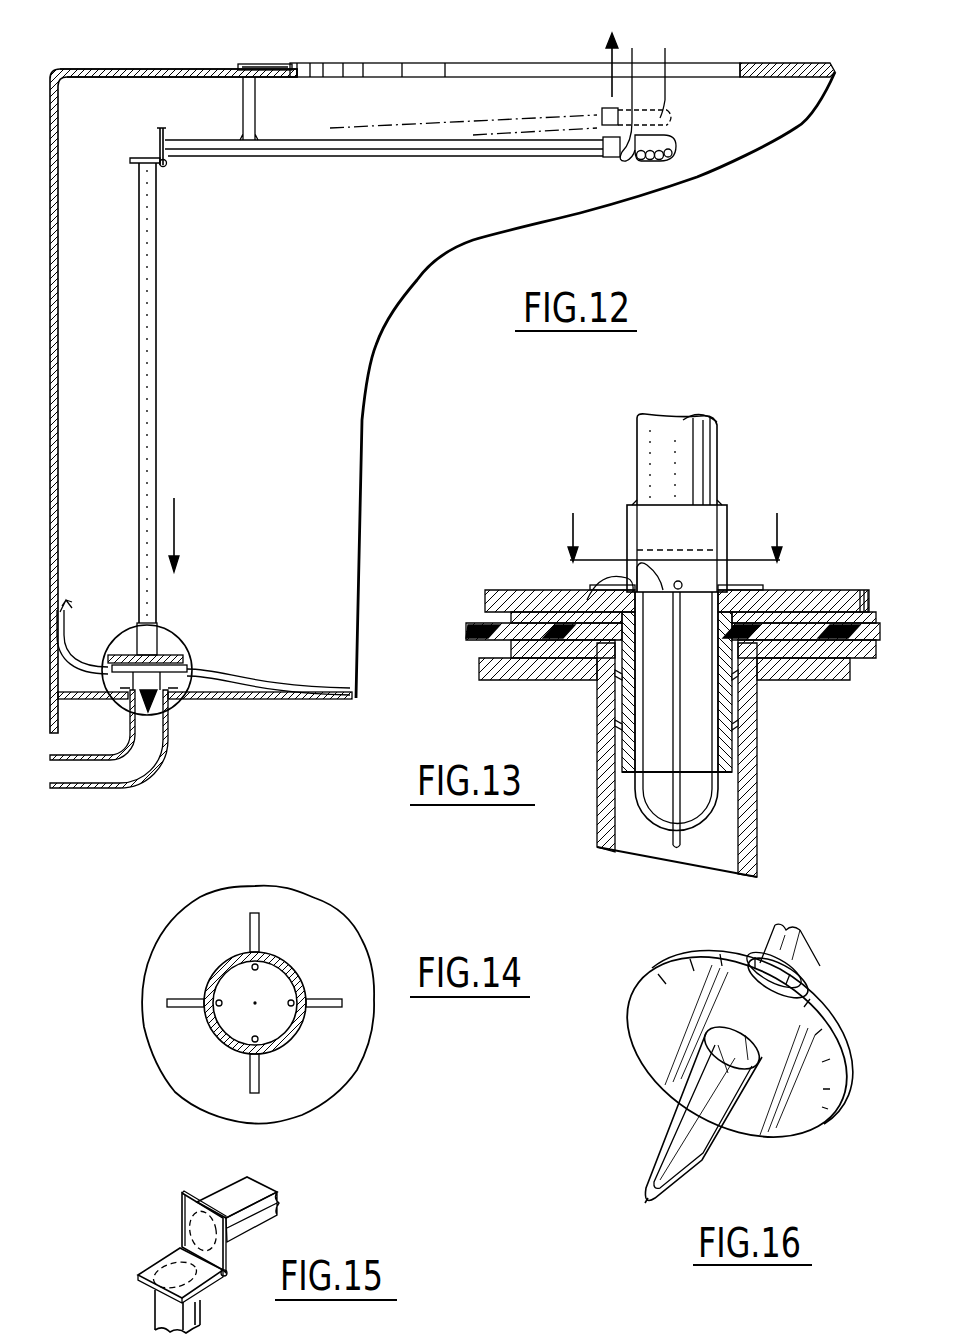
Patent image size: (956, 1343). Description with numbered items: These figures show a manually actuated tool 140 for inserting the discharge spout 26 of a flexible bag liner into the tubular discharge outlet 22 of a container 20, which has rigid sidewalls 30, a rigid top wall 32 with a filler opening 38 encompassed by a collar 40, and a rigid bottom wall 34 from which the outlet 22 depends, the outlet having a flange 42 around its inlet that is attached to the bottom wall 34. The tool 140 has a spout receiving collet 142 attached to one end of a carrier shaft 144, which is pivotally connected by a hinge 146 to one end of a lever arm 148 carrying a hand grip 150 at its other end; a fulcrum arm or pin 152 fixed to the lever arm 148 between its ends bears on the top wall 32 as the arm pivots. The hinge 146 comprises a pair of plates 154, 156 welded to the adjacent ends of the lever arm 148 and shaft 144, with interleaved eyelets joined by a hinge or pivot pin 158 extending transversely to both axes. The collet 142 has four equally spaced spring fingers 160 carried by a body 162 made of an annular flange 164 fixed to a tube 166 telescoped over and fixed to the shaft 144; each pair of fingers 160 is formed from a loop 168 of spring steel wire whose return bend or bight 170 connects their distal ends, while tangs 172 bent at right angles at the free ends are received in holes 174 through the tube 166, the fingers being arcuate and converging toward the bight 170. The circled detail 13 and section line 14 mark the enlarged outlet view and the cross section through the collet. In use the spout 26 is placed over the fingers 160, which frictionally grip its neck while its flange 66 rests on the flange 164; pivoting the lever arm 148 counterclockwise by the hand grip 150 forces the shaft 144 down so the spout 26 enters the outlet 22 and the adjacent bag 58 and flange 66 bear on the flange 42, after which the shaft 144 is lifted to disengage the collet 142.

In FIG. 12, the container 20 is at (187, 50).
In FIG. 12, the tubular discharge outlet 22 is at (160, 770).
In FIG. 13, the tubular discharge outlet 22 is at (760, 817).
In FIG. 12, the discharge spout 26 is at (172, 680).
In FIG. 12, the sidewalls 30 is at (52, 498).
In FIG. 12, the top wall 32 is at (103, 68).
In FIG. 12, the bottom wall 34 is at (305, 700).
In FIG. 13, the bottom wall 34 is at (481, 668).
In FIG. 12, the filler opening 38 is at (385, 71).
In FIG. 12, the collar 40 is at (272, 64).
In FIG. 13, the flange 42 is at (511, 650).
In FIG. 12, the bag 58 is at (213, 671).
In FIG. 13, the bag 58 is at (466, 631).
In FIG. 13, the flange 66 is at (511, 617).
In FIG. 12, the tool 140 is at (158, 393).
In FIG. 12, the spout receiving collet 142 is at (122, 652).
In FIG. 12, the carrier shaft 144 is at (143, 520).
In FIG. 13, the carrier shaft 144 is at (638, 438).
In FIG. 16, the carrier shaft 144 is at (812, 945).
In FIG. 15, the carrier shaft 144 is at (155, 1315).
In FIG. 12, the hinge 146 is at (157, 147).
In FIG. 15, the hinge 146 is at (162, 1260).
In FIG. 12, the lever arm 148 is at (347, 153).
In FIG. 15, the lever arm 148 is at (267, 1200).
In FIG. 12, the hand grip 150 is at (678, 118).
In FIG. 12, the fulcrum arm or pin 152 is at (258, 119).
In FIG. 15, the plate 154 is at (147, 1267).
In FIG. 15, the plate 156 is at (182, 1208).
In FIG. 15, the hinge or pivot pin 158 is at (228, 1280).
In FIG. 13, the spring fingers 160 is at (676, 720).
In FIG. 16, the spring fingers 160 is at (670, 1127).
In FIG. 13, the body 162 is at (830, 588).
In FIG. 16, the body 162 is at (730, 1042).
In FIG. 13, the annular flange 164 is at (486, 590).
In FIG. 14, the annular flange 164 is at (152, 979).
In FIG. 16, the annular flange 164 is at (650, 1045).
In FIG. 13, the tube 166 is at (727, 512).
In FIG. 14, the tube 166 is at (282, 960).
In FIG. 16, the tube 166 is at (808, 987).
In FIG. 16, the loop 168 is at (710, 1167).
In FIG. 16, the return bend or bight 170 is at (648, 1204).
In FIG. 13, the tangs 172 is at (754, 585).
In FIG. 14, the tangs 172 is at (249, 938).
In FIG. 13, the holes 174 is at (629, 592).
In FIG. 12, the detail view circle 13 is at (182, 640).
In FIG. 13, the section line 14 is at (670, 537).